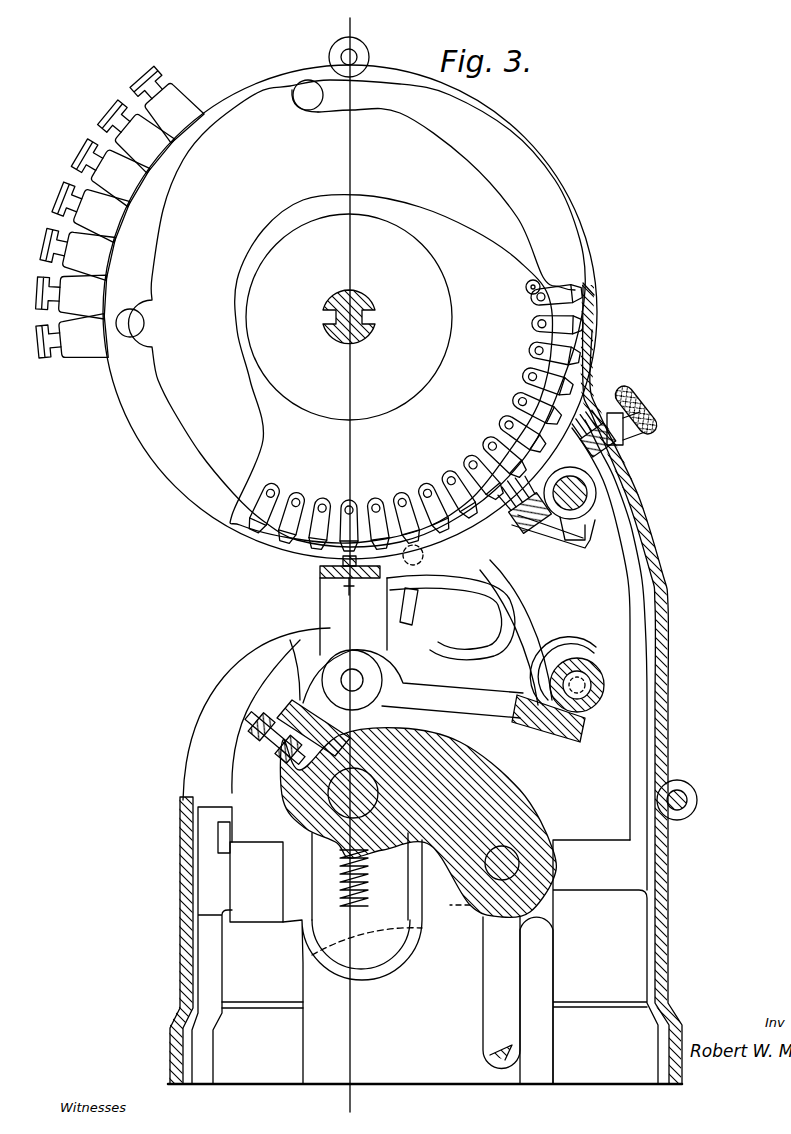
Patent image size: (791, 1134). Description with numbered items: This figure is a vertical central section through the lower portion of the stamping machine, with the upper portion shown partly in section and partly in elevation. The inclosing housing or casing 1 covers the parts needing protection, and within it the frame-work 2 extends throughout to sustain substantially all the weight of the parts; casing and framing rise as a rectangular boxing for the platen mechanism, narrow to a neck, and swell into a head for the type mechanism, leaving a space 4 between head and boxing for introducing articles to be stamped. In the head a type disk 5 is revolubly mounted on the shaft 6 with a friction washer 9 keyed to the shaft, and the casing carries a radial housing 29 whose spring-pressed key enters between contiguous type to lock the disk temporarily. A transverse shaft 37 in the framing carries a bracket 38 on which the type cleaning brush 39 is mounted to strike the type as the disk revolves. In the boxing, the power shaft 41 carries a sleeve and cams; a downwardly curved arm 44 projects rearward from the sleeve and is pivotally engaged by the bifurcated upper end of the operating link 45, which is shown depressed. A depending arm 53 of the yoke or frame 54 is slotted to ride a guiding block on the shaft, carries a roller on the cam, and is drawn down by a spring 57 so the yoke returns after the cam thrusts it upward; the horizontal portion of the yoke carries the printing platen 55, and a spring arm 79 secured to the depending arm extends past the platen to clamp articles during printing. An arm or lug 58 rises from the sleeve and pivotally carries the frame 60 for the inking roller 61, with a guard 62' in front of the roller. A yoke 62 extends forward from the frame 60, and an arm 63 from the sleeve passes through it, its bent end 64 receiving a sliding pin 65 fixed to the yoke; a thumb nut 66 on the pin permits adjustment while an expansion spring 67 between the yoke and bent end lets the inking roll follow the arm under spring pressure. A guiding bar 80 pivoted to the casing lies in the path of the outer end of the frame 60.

The inclosing housing or casing 1 is at (500, 210).
The frame-work 2 is at (212, 966).
The space 4 is at (512, 655).
The type disk 5 is at (406, 373).
The shaft 6 is at (360, 310).
The friction washer 9 is at (447, 318).
The radial housing 29 is at (175, 113).
The transverse shaft 37 is at (588, 495).
The bracket 38 is at (562, 538).
The type cleaning brush 39 is at (540, 490).
The power shaft 41 is at (330, 796).
The downwardly curved arm 44 is at (500, 822).
The operating link 45 is at (483, 985).
The depending arm 53 is at (390, 920).
The yoke or frame 54 is at (325, 600).
The printing platen 55 is at (340, 574).
The spring 57 is at (340, 872).
The arm or lug 58 is at (386, 735).
The frame 60 is at (470, 692).
The inking roller 61 is at (586, 702).
The yoke 62 is at (352, 661).
The guard 62' is at (568, 659).
The arm 63 is at (286, 690).
The bent end 64 is at (252, 741).
The pin 65 is at (237, 681).
The thumb nut 66 is at (268, 712).
The expansion spring 67 is at (272, 756).
The spring arm 79 is at (502, 596).
The guiding bar 80 is at (414, 600).